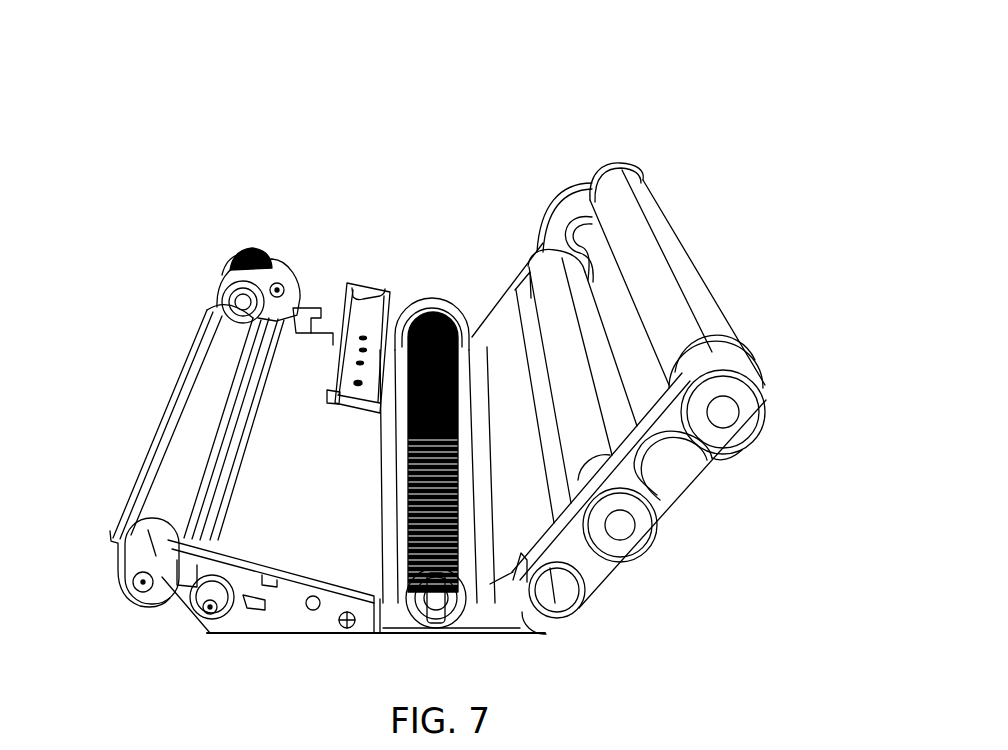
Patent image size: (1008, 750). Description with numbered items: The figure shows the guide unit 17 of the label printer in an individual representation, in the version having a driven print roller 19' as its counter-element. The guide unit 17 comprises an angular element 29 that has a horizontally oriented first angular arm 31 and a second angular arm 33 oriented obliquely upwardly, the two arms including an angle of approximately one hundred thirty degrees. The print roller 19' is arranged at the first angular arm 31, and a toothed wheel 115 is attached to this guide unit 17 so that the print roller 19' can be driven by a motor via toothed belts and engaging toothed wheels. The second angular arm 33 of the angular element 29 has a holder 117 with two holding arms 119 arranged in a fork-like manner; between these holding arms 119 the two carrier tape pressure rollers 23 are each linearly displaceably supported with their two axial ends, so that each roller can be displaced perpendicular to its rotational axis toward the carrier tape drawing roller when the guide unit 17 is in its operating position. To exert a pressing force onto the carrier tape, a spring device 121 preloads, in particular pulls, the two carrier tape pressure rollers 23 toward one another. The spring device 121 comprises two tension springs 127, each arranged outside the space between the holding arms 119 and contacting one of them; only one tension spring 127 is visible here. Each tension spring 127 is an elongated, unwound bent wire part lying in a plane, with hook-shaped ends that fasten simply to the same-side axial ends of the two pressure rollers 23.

The guide unit 17 is at (353, 168).
The holder 117 is at (571, 134).
The holding arms 119 is at (550, 218).
The carrier tape pressure rollers 23 is at (677, 243).
The toothed wheel 115 is at (254, 256).
The driven print roller 19' is at (169, 456).
The tension springs 127 is at (730, 452).
The spring device 121 is at (712, 542).
The second angular arm 33 is at (610, 580).
The angular element 29 is at (562, 673).
The first angular arm 31 is at (275, 620).